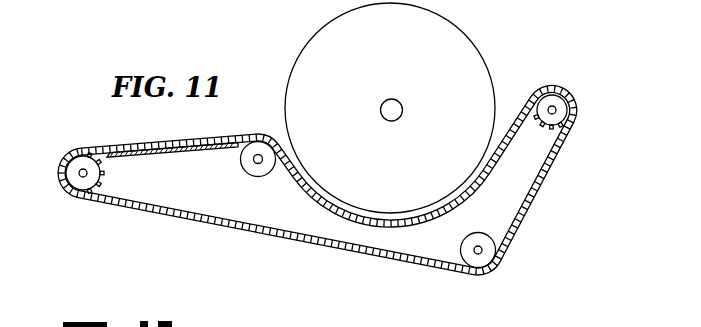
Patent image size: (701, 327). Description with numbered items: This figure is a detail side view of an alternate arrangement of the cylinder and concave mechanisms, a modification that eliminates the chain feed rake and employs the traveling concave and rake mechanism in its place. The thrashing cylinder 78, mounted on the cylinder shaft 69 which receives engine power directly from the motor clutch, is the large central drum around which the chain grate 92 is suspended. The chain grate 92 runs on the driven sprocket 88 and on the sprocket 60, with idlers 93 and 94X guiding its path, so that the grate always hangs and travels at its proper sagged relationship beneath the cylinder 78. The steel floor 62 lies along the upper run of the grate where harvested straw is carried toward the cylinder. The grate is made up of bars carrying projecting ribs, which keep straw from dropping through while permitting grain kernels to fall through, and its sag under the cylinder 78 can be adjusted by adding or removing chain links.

The sprocket 60 is at (78, 183).
The steel floor 62 is at (139, 156).
The idler 94X is at (246, 176).
The cylinder shaft 69 is at (403, 108).
The thrashing cylinder 78 is at (470, 41).
The sprocket 88 is at (557, 110).
The chain grate 92 is at (385, 258).
The idler 93 is at (468, 262).